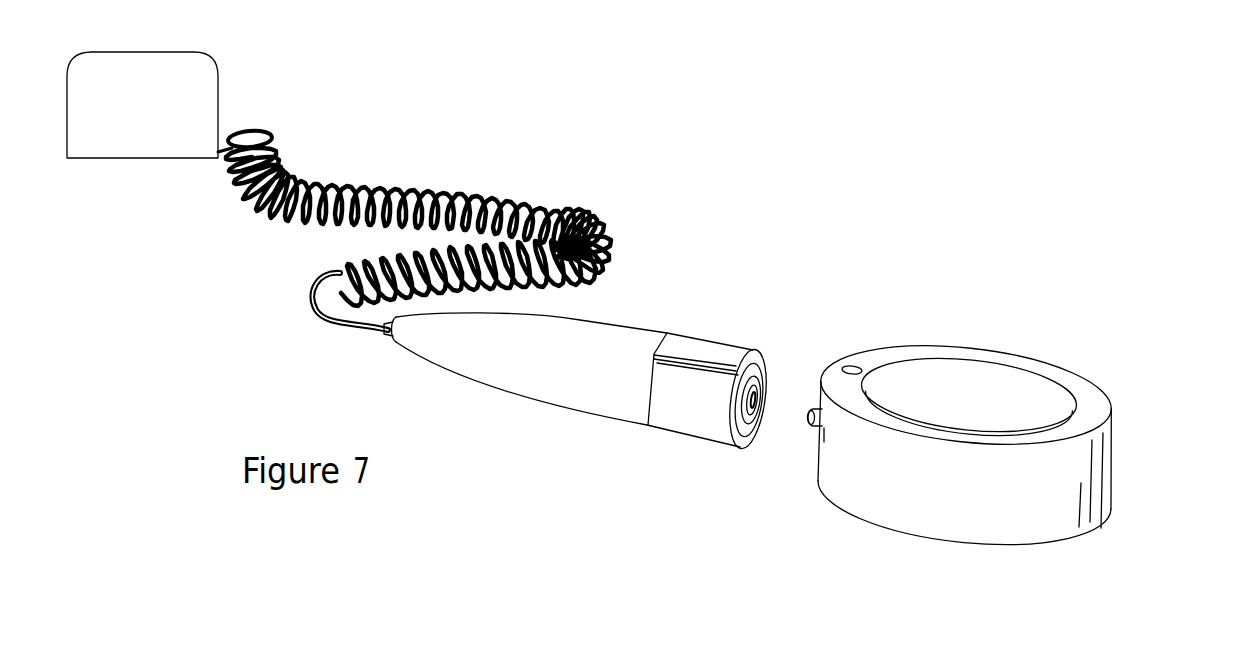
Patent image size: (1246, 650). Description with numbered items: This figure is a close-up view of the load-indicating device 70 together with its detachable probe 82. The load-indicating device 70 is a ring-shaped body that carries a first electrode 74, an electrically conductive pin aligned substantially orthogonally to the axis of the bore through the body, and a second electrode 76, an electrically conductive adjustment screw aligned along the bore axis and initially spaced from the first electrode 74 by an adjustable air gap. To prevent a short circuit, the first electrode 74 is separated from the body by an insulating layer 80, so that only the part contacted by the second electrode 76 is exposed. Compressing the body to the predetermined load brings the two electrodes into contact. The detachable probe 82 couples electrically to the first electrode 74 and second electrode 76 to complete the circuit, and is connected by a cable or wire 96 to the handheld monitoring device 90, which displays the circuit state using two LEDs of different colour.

The load-indicating device 70 is at (1075, 487).
The first electrode 74 is at (812, 427).
The second electrode 76 is at (850, 366).
The insulating layer 80 is at (820, 433).
The detachable probe 82 is at (675, 420).
The handheld monitoring device 90 is at (198, 85).
The cable or wire 96 is at (598, 227).